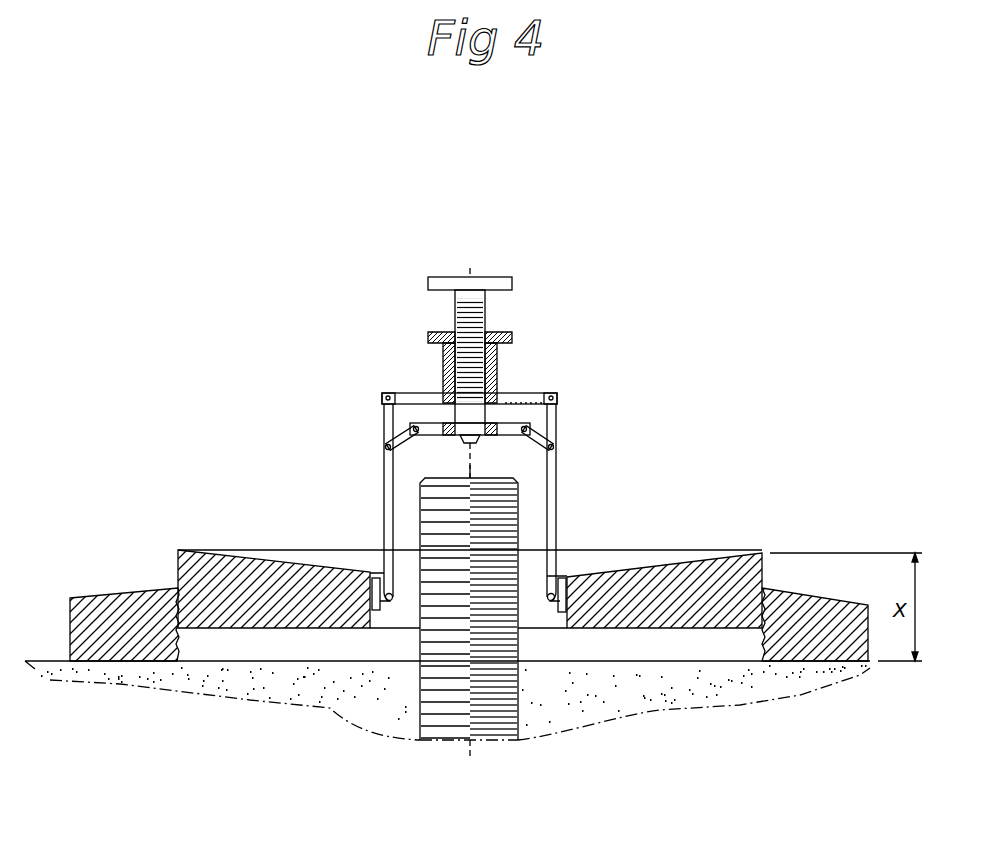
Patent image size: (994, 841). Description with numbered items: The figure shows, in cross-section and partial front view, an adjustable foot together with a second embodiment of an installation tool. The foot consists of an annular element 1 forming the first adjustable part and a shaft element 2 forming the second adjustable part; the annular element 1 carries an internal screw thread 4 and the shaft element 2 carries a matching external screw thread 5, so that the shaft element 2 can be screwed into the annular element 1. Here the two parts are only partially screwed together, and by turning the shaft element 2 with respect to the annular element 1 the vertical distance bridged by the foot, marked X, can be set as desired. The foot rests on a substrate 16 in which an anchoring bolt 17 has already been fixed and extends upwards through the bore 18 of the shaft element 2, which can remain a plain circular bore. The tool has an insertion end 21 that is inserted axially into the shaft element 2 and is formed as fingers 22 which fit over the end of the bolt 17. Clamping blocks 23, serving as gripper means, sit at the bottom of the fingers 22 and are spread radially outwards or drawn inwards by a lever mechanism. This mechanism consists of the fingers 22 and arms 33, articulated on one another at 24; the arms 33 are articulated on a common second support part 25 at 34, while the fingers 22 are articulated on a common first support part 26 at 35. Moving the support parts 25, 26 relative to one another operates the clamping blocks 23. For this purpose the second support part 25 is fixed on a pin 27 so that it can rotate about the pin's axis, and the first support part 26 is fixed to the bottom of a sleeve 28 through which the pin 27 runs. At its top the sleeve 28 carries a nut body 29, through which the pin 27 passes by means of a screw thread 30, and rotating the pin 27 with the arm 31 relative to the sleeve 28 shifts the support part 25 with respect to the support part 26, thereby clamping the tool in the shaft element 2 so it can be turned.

The annular element 1 is at (822, 600).
The shaft element 2 is at (663, 577).
The internal screw thread 4 is at (180, 643).
The external screw thread 5 is at (178, 557).
The substrate 16 is at (645, 712).
The anchoring bolt 17 is at (490, 715).
The bore 18 is at (557, 616).
The insertion end 21 is at (375, 560).
The fingers 22 is at (557, 480).
The clamping blocks 23 is at (390, 616).
The articulation of fingers and arms 24 is at (385, 447).
The second support part 25 is at (530, 446).
The first support part 26 is at (405, 395).
The pin 27 is at (444, 367).
The sleeve 28 is at (497, 377).
The nut body 29 is at (497, 336).
The screw thread 30 is at (487, 312).
The arm 31 is at (445, 280).
The arms 33 is at (551, 442).
The articulation of arms on second support part 34 is at (557, 414).
The articulation of fingers on first support part 35 is at (382, 404).